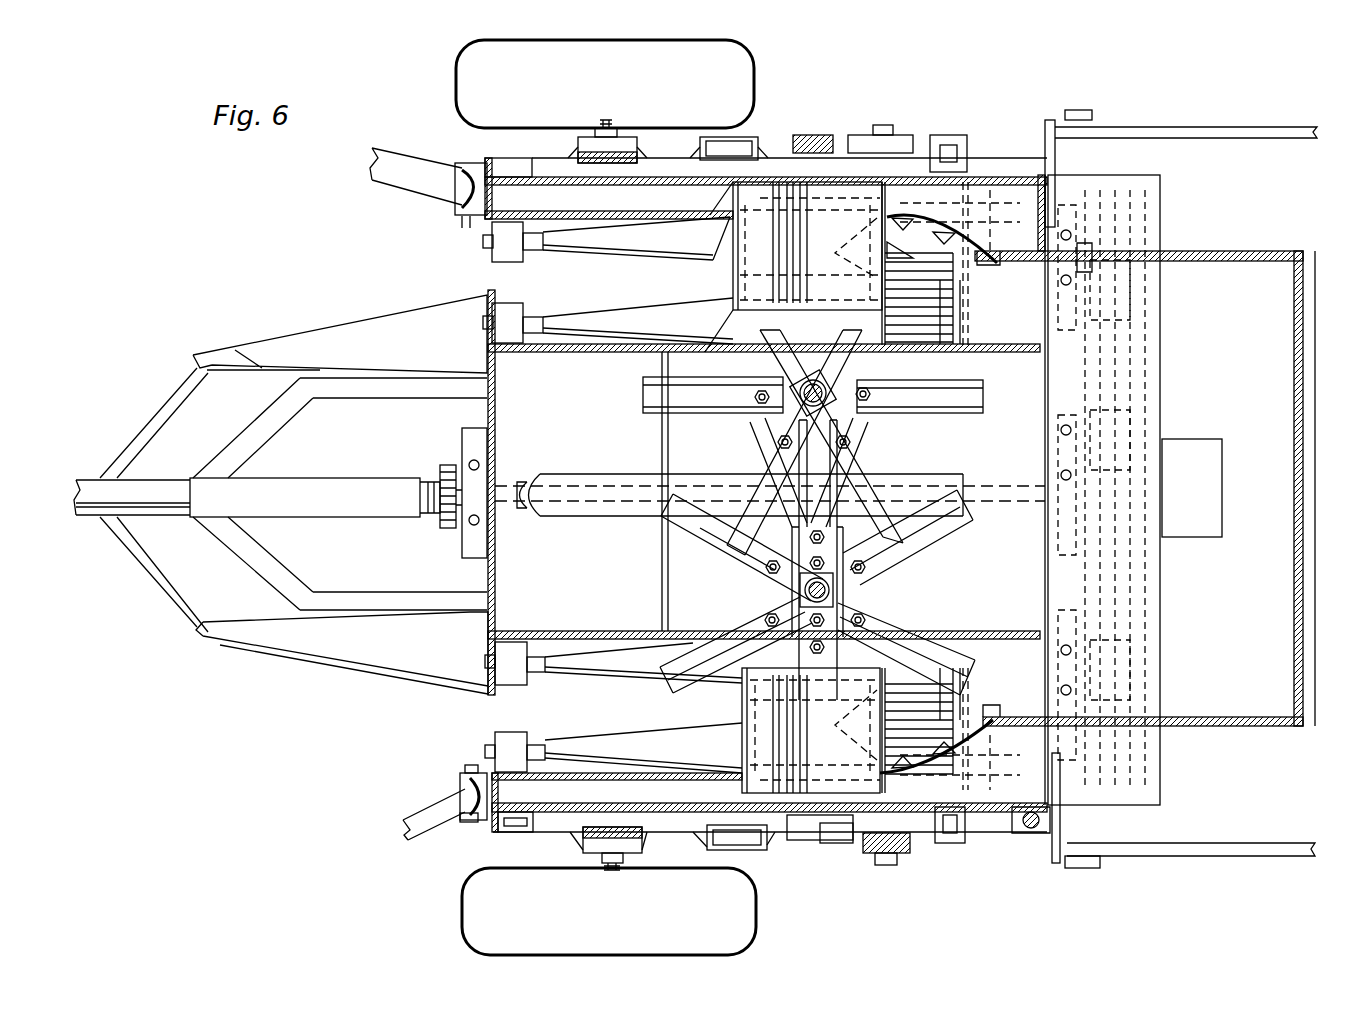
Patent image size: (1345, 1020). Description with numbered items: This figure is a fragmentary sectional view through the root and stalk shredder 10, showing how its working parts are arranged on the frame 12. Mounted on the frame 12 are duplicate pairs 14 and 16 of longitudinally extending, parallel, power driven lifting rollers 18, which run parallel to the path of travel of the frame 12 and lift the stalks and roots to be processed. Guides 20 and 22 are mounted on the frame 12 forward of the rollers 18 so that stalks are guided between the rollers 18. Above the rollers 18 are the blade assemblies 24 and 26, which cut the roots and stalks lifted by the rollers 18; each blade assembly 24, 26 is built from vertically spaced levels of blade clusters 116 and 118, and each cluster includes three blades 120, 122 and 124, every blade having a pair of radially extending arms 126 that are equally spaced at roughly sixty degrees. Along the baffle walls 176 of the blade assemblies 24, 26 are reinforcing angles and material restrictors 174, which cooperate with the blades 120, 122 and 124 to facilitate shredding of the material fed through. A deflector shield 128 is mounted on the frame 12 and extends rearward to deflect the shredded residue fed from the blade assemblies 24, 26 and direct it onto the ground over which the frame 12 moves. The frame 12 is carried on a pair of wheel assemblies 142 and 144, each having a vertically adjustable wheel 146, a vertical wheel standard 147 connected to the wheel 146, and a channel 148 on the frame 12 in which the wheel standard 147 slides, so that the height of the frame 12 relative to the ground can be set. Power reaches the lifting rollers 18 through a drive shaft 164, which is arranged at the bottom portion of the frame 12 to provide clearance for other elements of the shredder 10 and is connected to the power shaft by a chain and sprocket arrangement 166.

The root and stalk shredder 10 is at (372, 230).
The frame 12 is at (467, 151).
The pair of lifting rollers 14 is at (648, 280).
The pair of lifting rollers 16 is at (628, 708).
The lifting rollers 18 is at (708, 242).
The guide 20 is at (412, 340).
The guide 22 is at (370, 660).
The blade assembly 24 is at (928, 432).
The blade assembly 26 is at (898, 590).
The blade cluster 116 is at (718, 365).
The blade cluster 118 is at (705, 560).
The blade 120 is at (862, 382).
The blade 122 is at (785, 400).
The blade 124 is at (812, 327).
The radially extending arms 126 is at (770, 456).
The deflector shield 128 is at (1220, 250).
The wheel assembly 142 is at (452, 73).
The wheel assembly 144 is at (493, 852).
The vertically adjustable wheel 146 is at (735, 87).
The vertical wheel standard 147 is at (622, 147).
The channel 148 is at (592, 157).
The drive shaft 164 is at (517, 508).
The chain and sprocket arrangement 166 is at (440, 530).
The reinforcing angles and material restrictors 174 is at (978, 266).
The baffle walls 176 is at (968, 243).